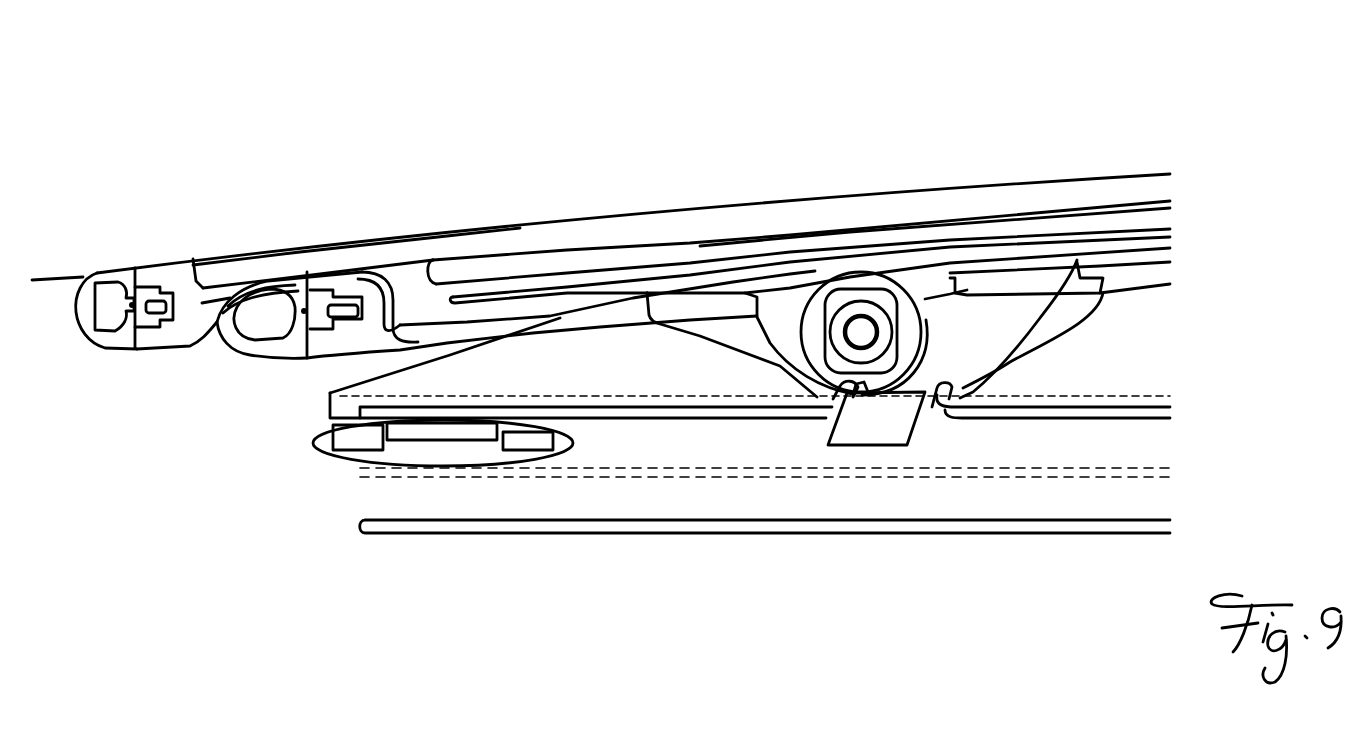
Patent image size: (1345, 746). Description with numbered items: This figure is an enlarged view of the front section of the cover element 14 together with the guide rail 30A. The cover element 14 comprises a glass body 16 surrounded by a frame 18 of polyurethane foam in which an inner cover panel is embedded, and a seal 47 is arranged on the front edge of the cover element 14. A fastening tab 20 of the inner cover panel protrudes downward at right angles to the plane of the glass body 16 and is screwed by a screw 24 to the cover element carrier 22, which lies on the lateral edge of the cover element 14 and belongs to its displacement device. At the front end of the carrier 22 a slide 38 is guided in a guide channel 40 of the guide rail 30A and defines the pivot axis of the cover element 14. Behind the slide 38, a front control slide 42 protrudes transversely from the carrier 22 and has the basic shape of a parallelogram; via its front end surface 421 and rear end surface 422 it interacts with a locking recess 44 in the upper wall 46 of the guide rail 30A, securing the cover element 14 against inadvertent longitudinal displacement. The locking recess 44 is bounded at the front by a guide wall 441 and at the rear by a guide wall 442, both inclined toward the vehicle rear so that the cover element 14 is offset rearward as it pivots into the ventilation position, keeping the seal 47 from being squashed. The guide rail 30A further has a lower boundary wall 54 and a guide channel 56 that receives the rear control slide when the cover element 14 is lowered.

The cover element 14 is at (412, 228).
The glass body 16 is at (280, 252).
The frame 18 is at (166, 267).
The fastening tab 20 is at (952, 315).
The cover element carrier 22 is at (606, 357).
The screw 24 is at (857, 330).
The guide rail 30A is at (493, 527).
The slide 38 is at (432, 450).
The guide channel 40 is at (607, 437).
The front control slide 42 is at (875, 427).
The locking recess 44 is at (918, 388).
The upper wall 46 is at (557, 412).
The seal 47 is at (104, 268).
The lower boundary wall 54 is at (795, 527).
The guide channel 56 is at (1070, 450).
The front end surface 421 is at (828, 420).
The rear end surface 422 is at (923, 427).
The guide wall 441 is at (742, 292).
The guide wall 442 is at (1077, 260).